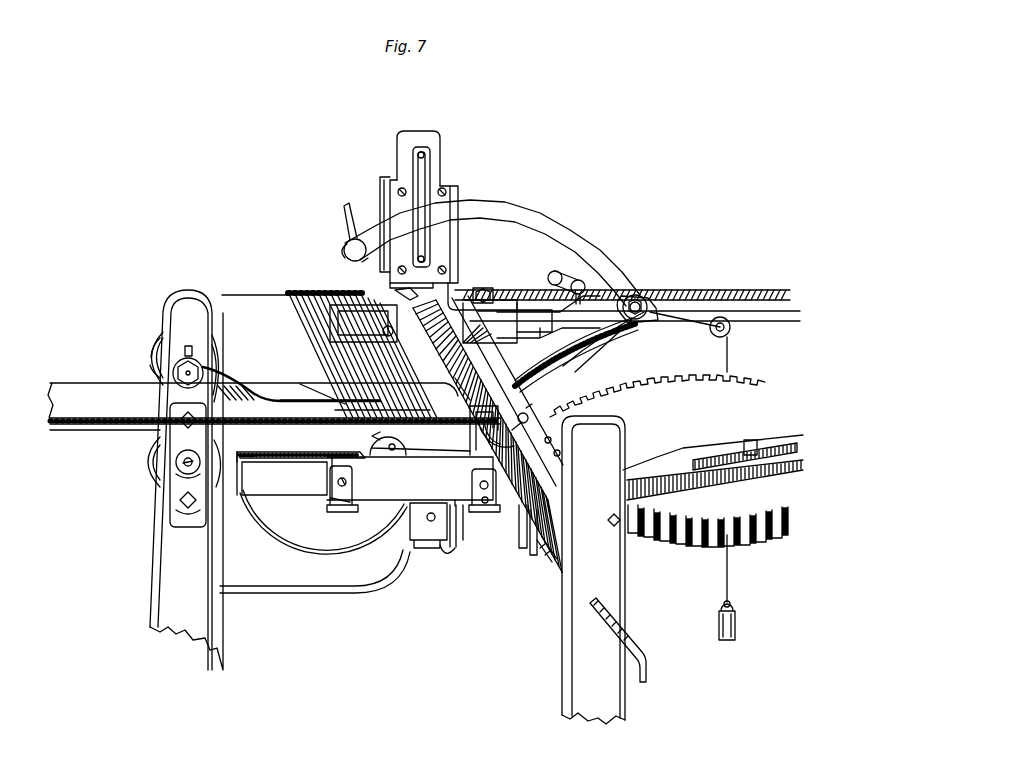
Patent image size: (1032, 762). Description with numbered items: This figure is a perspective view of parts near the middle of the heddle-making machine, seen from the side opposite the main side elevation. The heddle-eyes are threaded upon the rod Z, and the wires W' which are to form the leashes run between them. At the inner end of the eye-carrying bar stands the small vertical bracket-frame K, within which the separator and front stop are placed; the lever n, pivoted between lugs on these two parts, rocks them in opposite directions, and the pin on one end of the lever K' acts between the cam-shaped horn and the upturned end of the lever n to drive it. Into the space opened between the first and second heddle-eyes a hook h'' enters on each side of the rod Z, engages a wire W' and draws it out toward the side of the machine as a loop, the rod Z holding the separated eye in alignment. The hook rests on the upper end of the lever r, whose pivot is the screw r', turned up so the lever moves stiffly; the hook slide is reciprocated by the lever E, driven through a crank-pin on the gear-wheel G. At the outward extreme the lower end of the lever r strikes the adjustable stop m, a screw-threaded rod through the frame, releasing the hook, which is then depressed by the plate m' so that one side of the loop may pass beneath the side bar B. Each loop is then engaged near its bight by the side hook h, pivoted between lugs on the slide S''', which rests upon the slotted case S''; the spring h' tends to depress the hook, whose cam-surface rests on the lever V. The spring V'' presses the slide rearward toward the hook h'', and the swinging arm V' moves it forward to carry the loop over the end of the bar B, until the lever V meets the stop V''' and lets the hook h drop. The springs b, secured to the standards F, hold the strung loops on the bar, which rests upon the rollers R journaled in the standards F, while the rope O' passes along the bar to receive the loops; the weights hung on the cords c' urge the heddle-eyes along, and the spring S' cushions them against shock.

The vertical bracket-frame K is at (448, 216).
The lever K' is at (532, 279).
The lever n is at (365, 267).
The gear-wheel G is at (669, 461).
The lever E is at (683, 456).
The cord c' is at (737, 568).
The adjustable stop m is at (604, 570).
The plate m' is at (488, 434).
The screw r' is at (525, 530).
The lever r is at (536, 550).
The rod Z is at (262, 294).
The wires W' is at (359, 357).
The side bar B is at (274, 403).
The rope O' is at (207, 444).
The spring b is at (256, 392).
The standard F is at (181, 292).
The roller R is at (150, 466).
The slotted case S'' is at (318, 476).
The slide S''' is at (413, 484).
The spring S' is at (457, 494).
The spring h' is at (420, 443).
The side hook h is at (497, 433).
The hook h'' is at (527, 410).
The arm V' is at (467, 526).
The lever V is at (455, 562).
The spring V'' is at (323, 533).
The stop V''' is at (315, 580).